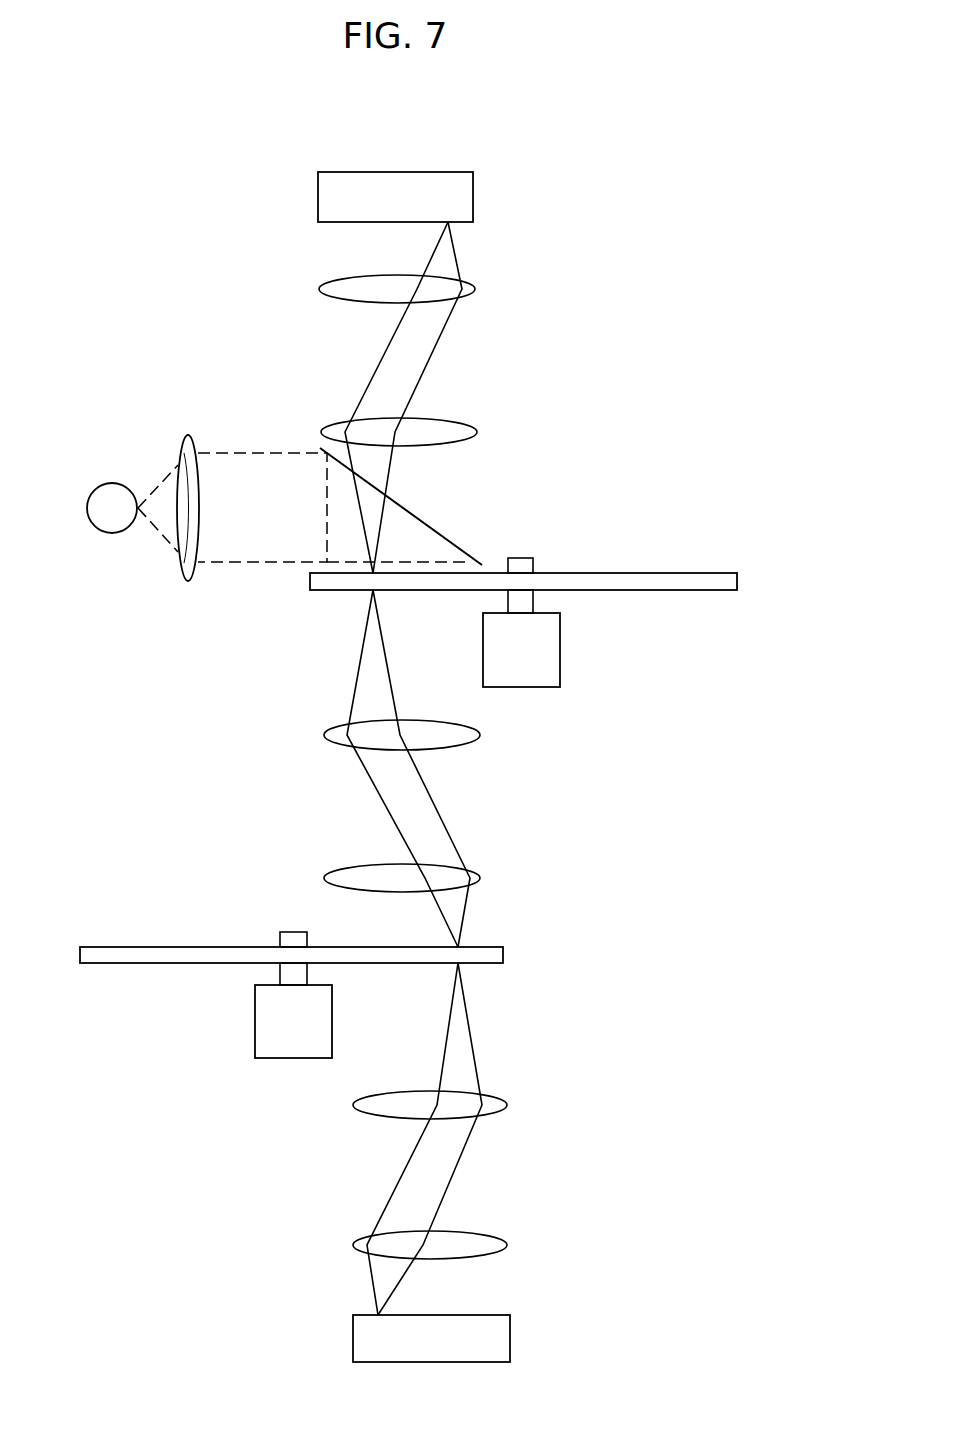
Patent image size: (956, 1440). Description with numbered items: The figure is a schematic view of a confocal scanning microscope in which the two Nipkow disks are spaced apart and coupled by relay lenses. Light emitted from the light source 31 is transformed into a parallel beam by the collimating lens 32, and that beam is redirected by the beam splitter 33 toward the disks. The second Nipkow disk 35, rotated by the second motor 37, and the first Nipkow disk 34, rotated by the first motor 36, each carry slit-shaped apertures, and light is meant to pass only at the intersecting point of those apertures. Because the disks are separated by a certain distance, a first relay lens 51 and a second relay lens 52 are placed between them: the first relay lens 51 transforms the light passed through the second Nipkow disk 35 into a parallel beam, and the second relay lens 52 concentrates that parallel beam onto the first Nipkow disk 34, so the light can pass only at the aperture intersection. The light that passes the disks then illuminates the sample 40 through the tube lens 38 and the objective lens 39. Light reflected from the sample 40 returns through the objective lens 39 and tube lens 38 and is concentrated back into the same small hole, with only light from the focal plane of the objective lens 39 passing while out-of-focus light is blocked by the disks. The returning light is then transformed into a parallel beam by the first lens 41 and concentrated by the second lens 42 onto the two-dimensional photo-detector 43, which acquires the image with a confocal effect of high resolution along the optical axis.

The light source 31 is at (122, 487).
The collimating lens 32 is at (188, 437).
The beam splitter 33 is at (413, 513).
The first Nipkow disk 34 is at (138, 950).
The second Nipkow disk 35 is at (716, 590).
The first motor 36 is at (266, 1034).
The second motor 37 is at (553, 670).
The tube lens 38 is at (507, 1105).
The objective lens 39 is at (507, 1245).
The sample 40 is at (510, 1330).
The first lens 41 is at (477, 432).
The second lens 42 is at (475, 289).
The two-dimensional photo-detector 43 is at (473, 186).
The first relay lens 51 is at (480, 735).
The second relay lens 52 is at (480, 878).